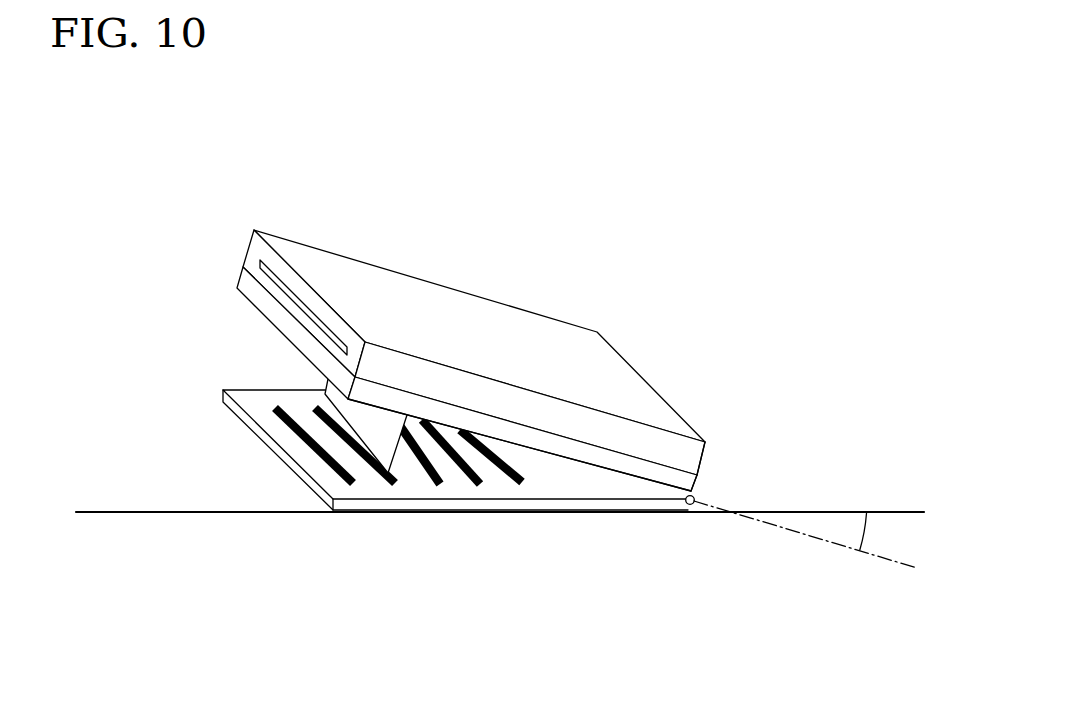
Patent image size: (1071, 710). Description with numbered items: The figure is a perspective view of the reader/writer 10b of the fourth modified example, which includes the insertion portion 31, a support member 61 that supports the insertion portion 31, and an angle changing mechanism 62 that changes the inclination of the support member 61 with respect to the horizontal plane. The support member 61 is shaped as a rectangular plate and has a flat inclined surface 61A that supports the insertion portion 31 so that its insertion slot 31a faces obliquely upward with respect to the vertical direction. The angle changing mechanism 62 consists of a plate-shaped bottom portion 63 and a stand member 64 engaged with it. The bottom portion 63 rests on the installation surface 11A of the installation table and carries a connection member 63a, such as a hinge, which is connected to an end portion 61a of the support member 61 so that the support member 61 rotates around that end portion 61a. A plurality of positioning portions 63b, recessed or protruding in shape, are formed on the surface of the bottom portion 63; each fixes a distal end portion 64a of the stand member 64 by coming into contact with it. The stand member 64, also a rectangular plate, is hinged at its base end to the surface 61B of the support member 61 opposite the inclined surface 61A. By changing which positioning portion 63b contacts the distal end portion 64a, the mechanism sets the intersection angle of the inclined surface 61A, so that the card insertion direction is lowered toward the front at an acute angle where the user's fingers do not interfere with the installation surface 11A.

The reader/writer 10b is at (757, 188).
The installation surface 11A is at (487, 456).
The insertion portion 31 is at (474, 320).
The insertion slot 31a is at (264, 262).
The support member 61 is at (517, 394).
The inclined surface 61A is at (537, 431).
The surface opposite to the inclined surface 61B is at (573, 467).
The end portion 61a is at (695, 486).
The angle changing mechanism 62 is at (459, 360).
The bottom portion 63 is at (425, 437).
The connection member 63a is at (690, 506).
The positioning portions 63b is at (297, 425).
The stand member 64 is at (375, 428).
The distal end portion 64a is at (387, 473).